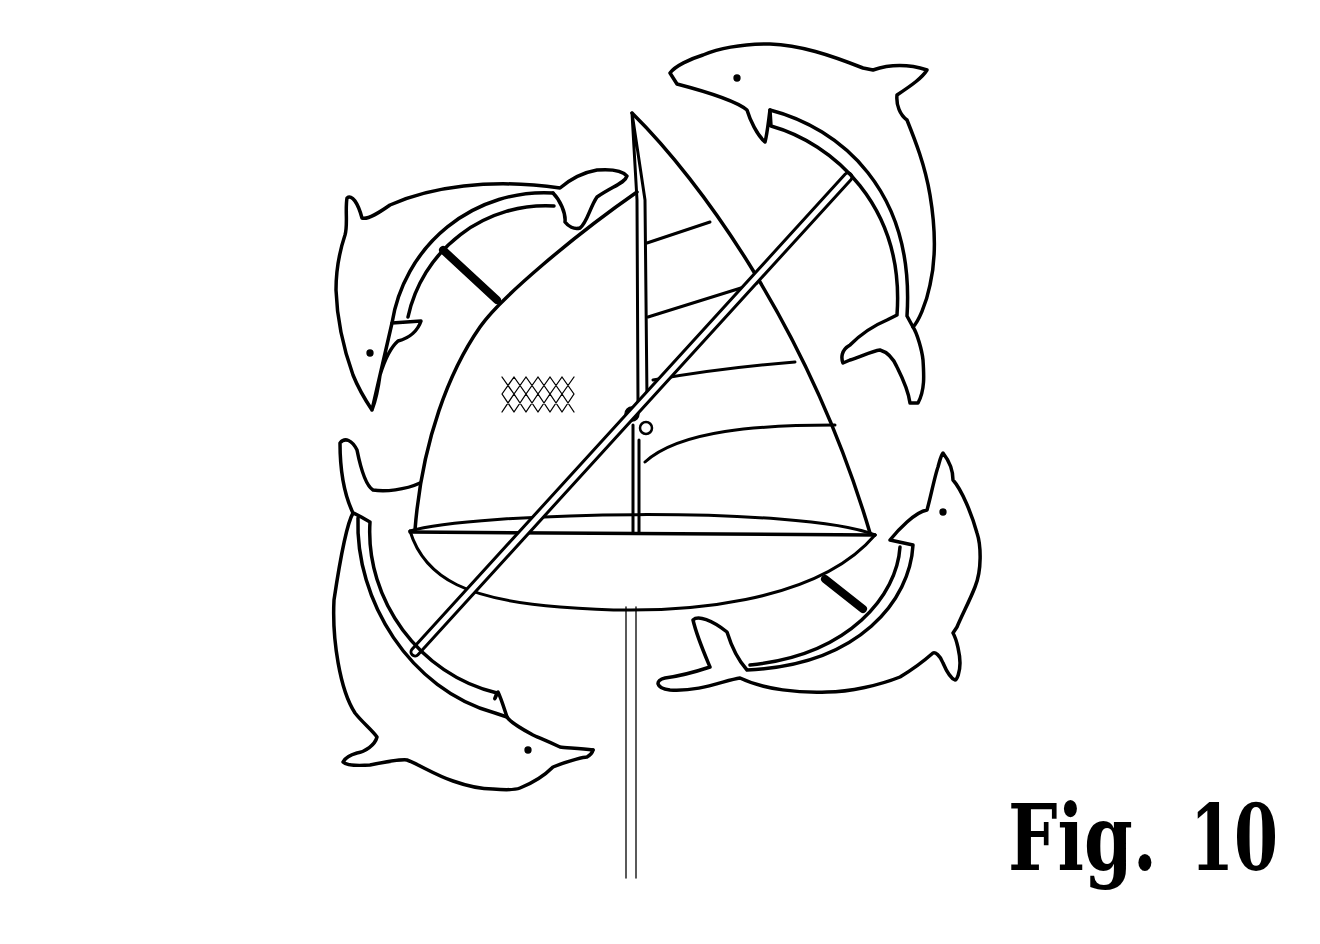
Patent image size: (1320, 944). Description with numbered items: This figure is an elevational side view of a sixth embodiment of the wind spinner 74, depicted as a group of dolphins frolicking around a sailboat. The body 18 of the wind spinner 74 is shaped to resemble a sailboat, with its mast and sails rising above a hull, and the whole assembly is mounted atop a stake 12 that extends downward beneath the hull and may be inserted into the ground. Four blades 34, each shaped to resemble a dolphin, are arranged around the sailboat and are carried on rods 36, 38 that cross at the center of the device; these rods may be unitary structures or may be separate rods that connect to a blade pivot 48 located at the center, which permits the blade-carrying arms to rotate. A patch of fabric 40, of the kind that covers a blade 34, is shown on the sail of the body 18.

The stake 12 is at (640, 757).
The body 18 is at (630, 113).
The blades 34 is at (923, 210).
The rod 36 is at (780, 260).
The rod 38 is at (453, 255).
The fabric 40 is at (537, 380).
The first blade pivot 48 is at (650, 413).
The wind spinner 74 is at (280, 389).